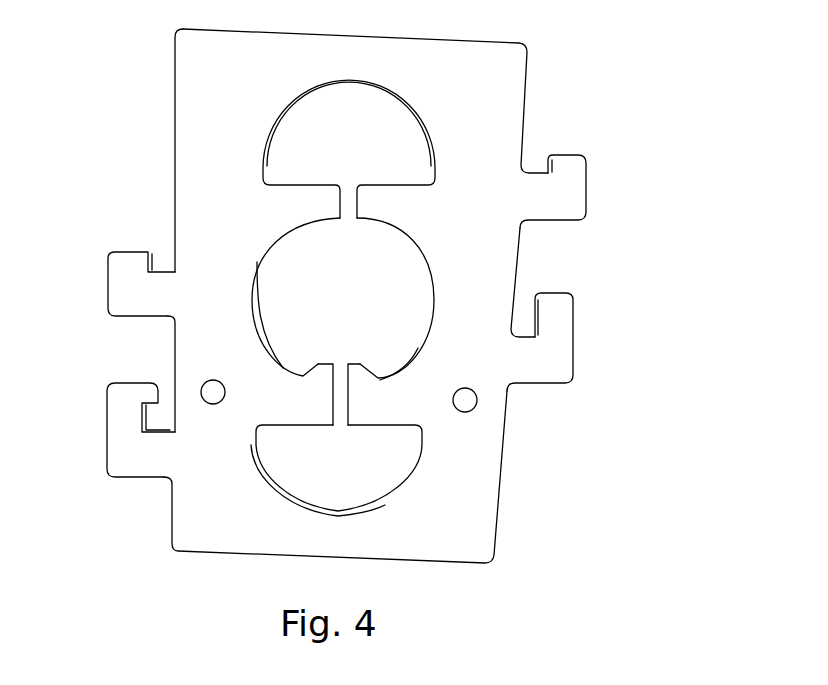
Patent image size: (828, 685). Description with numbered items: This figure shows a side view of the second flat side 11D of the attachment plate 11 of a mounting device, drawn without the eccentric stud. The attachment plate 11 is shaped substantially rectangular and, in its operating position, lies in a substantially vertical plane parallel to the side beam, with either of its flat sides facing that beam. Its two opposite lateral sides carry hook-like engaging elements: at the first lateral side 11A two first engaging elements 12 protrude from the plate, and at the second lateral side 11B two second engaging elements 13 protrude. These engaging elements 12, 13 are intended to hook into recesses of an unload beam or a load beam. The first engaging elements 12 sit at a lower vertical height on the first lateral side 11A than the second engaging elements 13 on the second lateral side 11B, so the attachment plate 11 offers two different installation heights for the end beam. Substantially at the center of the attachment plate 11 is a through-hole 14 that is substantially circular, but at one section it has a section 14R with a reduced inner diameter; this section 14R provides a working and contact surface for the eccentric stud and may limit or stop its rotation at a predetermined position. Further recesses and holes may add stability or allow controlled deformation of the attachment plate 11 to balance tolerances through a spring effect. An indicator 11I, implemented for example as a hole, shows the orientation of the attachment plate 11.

The attachment plate 11 is at (369, 296).
The first lateral side 11A is at (158, 168).
The second lateral side 11B is at (512, 478).
The second flat side 11D is at (490, 92).
The indicator 11I is at (215, 404).
The first engaging element 12 is at (116, 417).
The second engaging element 13 is at (580, 175).
The through-hole 14 is at (400, 263).
The section with reduced inner diameter 14R is at (358, 362).